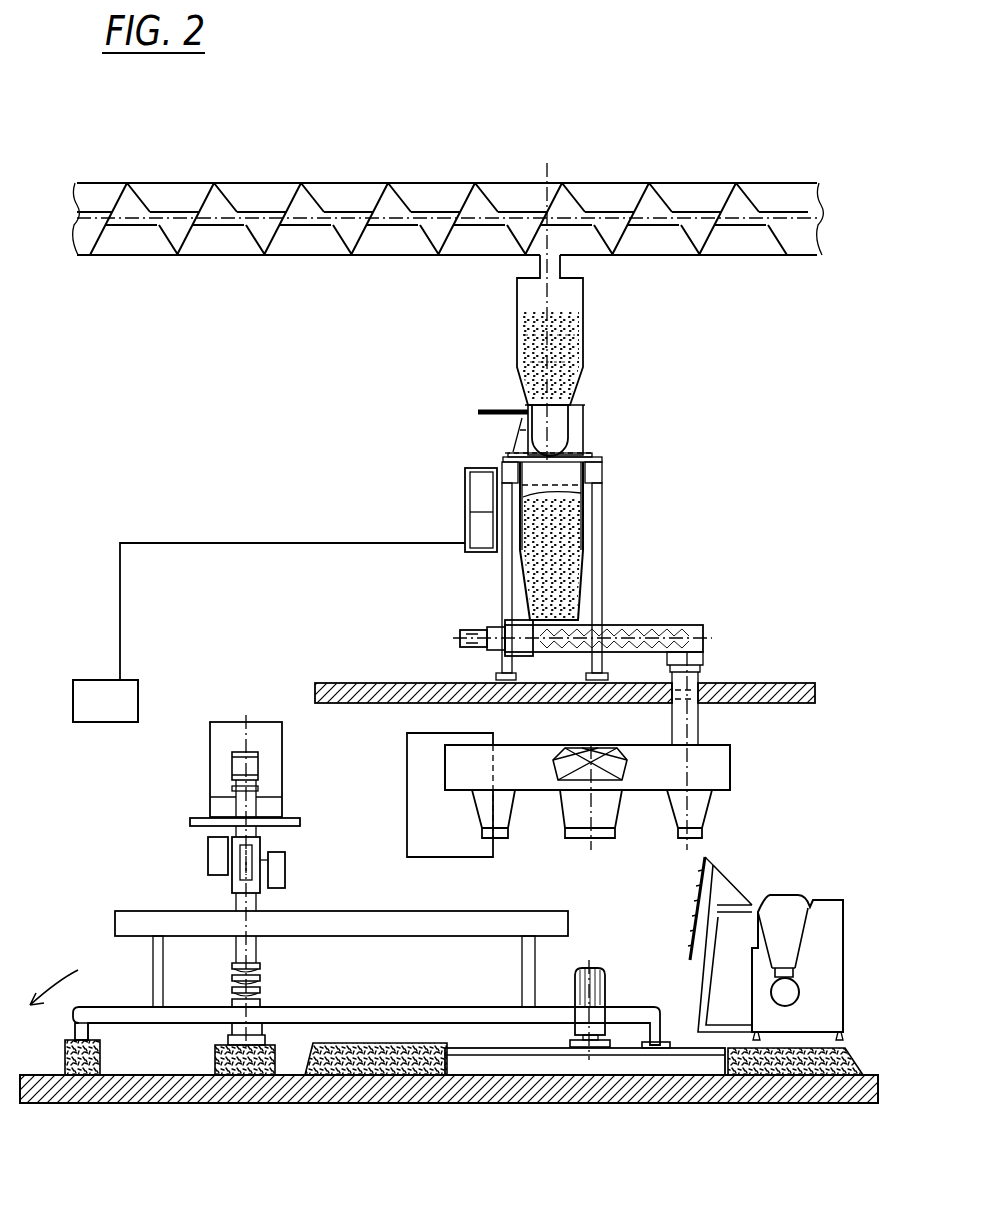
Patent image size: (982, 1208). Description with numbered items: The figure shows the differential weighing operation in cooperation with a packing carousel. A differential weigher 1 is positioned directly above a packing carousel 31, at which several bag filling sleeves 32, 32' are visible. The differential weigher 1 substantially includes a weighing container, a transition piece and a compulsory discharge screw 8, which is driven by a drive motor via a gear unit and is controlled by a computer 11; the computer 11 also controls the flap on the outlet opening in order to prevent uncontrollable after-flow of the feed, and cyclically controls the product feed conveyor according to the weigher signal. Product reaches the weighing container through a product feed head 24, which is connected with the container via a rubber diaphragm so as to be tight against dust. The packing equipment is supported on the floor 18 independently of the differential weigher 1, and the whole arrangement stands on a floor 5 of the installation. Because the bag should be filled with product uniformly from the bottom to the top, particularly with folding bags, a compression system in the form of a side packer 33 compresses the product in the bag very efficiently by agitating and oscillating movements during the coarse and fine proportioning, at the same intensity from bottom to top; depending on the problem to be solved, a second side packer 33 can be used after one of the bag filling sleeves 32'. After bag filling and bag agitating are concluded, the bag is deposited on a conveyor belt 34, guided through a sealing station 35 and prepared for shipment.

The differential weigher 1 is at (626, 519).
The floor 5 is at (748, 703).
The compulsory discharge screw 8 is at (636, 627).
The computer 11 is at (138, 708).
The floor 18 is at (604, 1105).
The product feed head 24 is at (585, 422).
The packing carousel 31 is at (722, 770).
The bag filling sleeve 32 is at (714, 831).
The bag filling sleeve 32' is at (609, 809).
The side packer 33 is at (832, 962).
The conveyor belt 34 is at (360, 1008).
The sealing station 35 is at (193, 856).